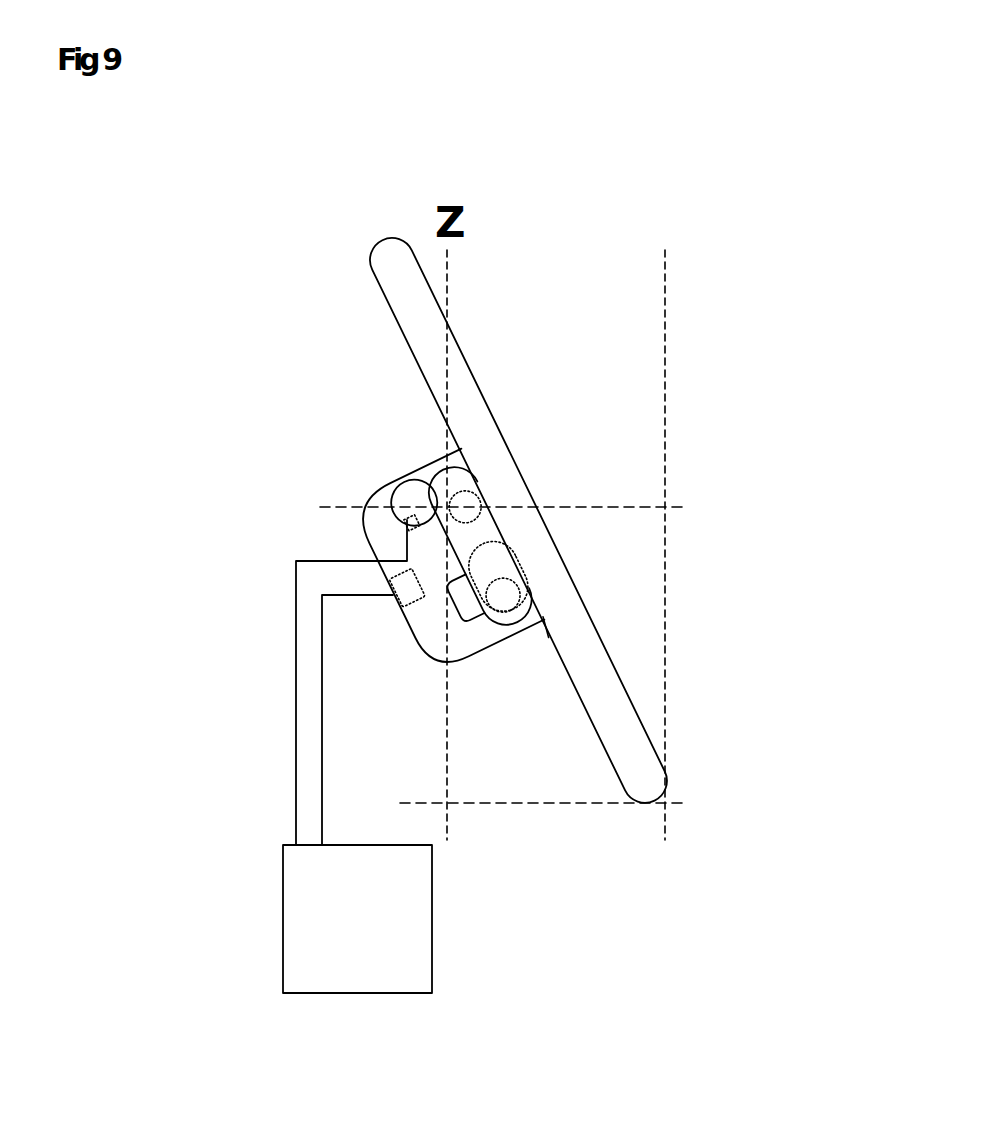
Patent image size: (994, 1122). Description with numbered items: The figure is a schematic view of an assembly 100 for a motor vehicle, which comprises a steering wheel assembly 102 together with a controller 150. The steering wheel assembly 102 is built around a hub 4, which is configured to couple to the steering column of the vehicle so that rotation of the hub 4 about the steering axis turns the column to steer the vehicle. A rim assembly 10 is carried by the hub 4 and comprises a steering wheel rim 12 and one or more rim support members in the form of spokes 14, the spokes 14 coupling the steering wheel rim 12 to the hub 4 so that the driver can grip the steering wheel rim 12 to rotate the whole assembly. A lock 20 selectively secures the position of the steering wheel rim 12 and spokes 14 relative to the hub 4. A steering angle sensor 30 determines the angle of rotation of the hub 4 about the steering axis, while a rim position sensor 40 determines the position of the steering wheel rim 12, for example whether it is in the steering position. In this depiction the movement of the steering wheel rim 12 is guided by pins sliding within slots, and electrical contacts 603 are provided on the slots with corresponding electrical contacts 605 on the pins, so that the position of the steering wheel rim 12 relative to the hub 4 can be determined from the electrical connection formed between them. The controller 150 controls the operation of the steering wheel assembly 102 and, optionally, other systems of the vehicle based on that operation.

The assembly 100 is at (360, 125).
The steering wheel assembly 102 is at (572, 293).
The rim assembly 10 is at (702, 641).
The steering wheel rim 12 is at (633, 758).
The spokes 14 is at (517, 623).
The lock 20 is at (473, 620).
The steering angle sensor 30 is at (410, 597).
The hub 4 is at (433, 643).
The rim position sensor 40 is at (365, 530).
The electrical contacts 603 is at (405, 520).
The corresponding electrical contacts 605 is at (462, 518).
The controller 150 is at (422, 930).